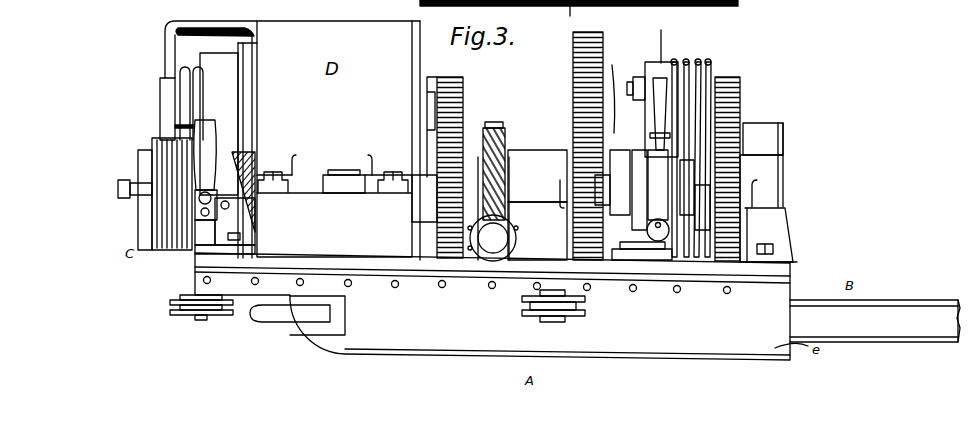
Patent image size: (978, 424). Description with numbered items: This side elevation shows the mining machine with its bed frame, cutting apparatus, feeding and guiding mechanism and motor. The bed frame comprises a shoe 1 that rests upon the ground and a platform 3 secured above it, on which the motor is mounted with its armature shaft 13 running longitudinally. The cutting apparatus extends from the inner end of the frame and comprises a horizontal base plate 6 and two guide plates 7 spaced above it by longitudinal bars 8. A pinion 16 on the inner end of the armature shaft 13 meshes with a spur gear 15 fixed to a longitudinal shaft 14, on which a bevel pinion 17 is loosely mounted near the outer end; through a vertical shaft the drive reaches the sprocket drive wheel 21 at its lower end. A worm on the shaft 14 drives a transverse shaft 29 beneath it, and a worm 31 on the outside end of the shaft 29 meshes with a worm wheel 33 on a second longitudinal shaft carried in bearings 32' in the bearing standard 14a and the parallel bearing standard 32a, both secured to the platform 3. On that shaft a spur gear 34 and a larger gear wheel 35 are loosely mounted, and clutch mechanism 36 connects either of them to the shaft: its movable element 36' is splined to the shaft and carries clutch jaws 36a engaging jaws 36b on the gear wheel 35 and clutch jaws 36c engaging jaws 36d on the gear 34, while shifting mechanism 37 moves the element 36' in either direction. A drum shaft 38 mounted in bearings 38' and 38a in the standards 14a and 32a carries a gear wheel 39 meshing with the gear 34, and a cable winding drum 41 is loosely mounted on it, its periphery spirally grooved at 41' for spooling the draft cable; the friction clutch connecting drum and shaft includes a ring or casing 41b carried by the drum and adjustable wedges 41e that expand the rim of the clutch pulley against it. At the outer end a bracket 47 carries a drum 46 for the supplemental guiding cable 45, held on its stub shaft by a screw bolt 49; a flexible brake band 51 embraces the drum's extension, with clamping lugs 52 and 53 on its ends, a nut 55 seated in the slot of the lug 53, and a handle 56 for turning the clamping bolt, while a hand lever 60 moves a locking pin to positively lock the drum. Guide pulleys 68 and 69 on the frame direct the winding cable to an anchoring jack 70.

The shoe 1 is at (470, 4).
The platform 3 is at (778, 272).
The base plate 6 is at (741, 185).
The guide plates 7 is at (875, 316).
The bars 8 is at (880, 323).
The armature shaft 13 is at (433, 96).
The shaft 14 is at (340, 180).
The bearing standard 14a is at (539, 247).
The spur gear 15 is at (445, 192).
The pinion 16 is at (462, 110).
The bevel pinion 17 is at (233, 192).
The sprocket drive wheel 21 is at (280, 316).
The shaft 29 is at (493, 238).
The worm 31 is at (460, 258).
The bearings 32' is at (665, 208).
The bearing standard 32a is at (773, 232).
The worm wheel 33 is at (493, 186).
The spur gear 34 is at (582, 260).
The gear wheel 35 is at (747, 240).
The clutch mechanism 36 is at (633, 205).
The movable element 36' is at (690, 287).
The clutch jaws 36a is at (717, 130).
The clutch jaws 36b is at (750, 137).
The clutch jaws 36c is at (572, 160).
The clutch jaws 36d is at (625, 45).
The shifting mechanism 37 is at (640, 260).
The drum shaft 38 is at (572, 111).
The bearing 38' is at (537, 119).
The bearing 38a is at (767, 155).
The gear wheel 39 is at (578, 56).
The cable winding drum 41 is at (669, 149).
The spiral grooves 41' is at (700, 107).
The ring or casing 41b is at (666, 34).
The adjustable wedges or expanders 41e is at (653, 78).
The supplemental cable 45 is at (168, 250).
The drum 46 is at (157, 246).
The bracket 47 is at (235, 228).
The screw bolt 49 is at (118, 188).
The flexible brake band 51 is at (187, 257).
The clamping lug 52 is at (205, 180).
The clamping lug 53 is at (198, 200).
The nut 55 is at (256, 202).
The handle 56 is at (205, 120).
The hand lever 60 is at (235, 130).
The guide pulley 68 is at (194, 313).
The guide pulley 69 is at (540, 310).
The jack 70 is at (740, 110).